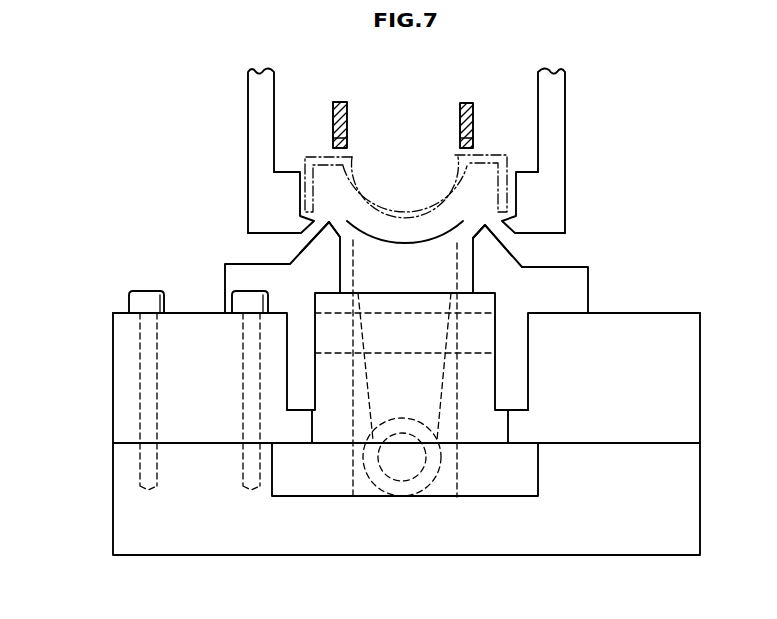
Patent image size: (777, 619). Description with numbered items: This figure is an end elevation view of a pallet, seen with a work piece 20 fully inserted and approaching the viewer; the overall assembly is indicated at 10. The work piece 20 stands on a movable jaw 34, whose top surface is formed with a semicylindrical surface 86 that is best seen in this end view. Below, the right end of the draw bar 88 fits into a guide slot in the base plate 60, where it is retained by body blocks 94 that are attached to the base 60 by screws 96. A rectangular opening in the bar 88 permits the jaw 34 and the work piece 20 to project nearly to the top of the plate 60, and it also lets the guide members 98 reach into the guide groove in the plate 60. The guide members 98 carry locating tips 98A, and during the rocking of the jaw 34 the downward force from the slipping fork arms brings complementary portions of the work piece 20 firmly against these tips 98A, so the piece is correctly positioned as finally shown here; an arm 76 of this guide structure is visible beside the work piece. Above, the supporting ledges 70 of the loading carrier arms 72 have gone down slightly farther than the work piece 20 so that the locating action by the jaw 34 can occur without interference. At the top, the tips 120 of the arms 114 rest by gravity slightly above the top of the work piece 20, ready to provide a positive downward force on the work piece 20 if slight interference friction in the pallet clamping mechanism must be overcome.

The fixture assembly 10 is at (101, 397).
The work piece 20 is at (441, 423).
The movable jaw 34 is at (420, 276).
The base plate 60 is at (113, 507).
The ledges 70 is at (307, 218).
The arms 72 is at (253, 97).
The fork arm 76 is at (489, 291).
The semicylindrical surface 86 is at (380, 242).
The draw bar 88 is at (508, 478).
The body blocks 94 is at (179, 312).
The screws 96 is at (246, 298).
The guide members 98 is at (302, 253).
The locating tips 98A is at (329, 221).
The arms 114 is at (337, 101).
The tips 120 is at (344, 147).